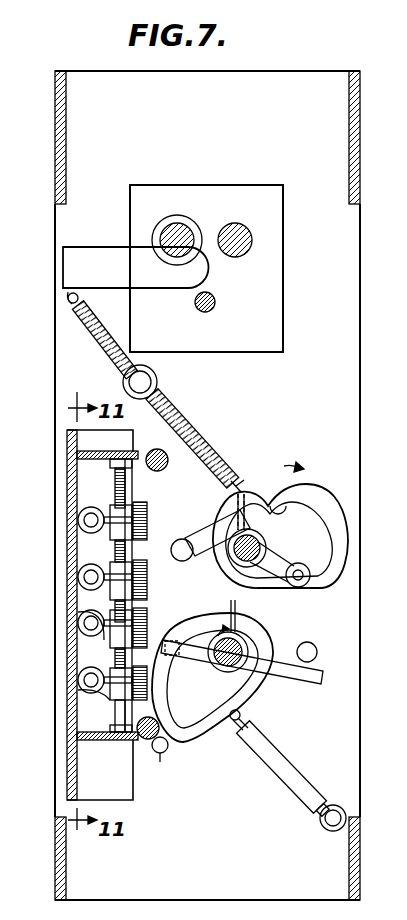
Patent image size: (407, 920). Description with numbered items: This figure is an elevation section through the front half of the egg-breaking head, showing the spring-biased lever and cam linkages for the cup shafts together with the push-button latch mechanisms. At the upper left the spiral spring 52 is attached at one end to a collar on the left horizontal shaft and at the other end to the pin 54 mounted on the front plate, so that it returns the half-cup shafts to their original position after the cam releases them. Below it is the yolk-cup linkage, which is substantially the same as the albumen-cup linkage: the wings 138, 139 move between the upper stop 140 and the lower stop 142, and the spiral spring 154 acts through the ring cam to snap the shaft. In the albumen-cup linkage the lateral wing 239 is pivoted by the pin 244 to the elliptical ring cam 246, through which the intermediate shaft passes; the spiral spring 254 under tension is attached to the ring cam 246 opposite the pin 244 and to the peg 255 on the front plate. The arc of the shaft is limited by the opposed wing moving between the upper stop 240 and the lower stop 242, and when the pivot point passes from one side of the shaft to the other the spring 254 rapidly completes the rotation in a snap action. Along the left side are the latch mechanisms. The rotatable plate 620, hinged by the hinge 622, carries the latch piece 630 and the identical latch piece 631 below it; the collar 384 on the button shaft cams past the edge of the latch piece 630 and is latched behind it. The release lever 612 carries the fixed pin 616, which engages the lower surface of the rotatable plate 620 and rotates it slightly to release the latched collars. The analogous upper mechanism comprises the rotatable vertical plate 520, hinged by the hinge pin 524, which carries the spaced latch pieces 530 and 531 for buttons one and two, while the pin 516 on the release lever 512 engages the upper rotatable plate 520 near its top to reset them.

The spiral spring 52 is at (100, 340).
The pin 54 is at (157, 386).
The spiral spring 154 is at (200, 426).
The upper stop 140 is at (306, 490).
The wing 138 is at (196, 516).
The lower stop 142 is at (177, 540).
The wing 139 is at (296, 562).
The wing 239 is at (202, 662).
The upper stop 240 is at (322, 642).
The pin 244 is at (172, 640).
The elliptical ring cam 246 is at (244, 708).
The spiral spring 254 is at (297, 754).
The peg 255 is at (334, 805).
The release lever 512 is at (70, 438).
The pin 516 is at (112, 459).
The fixed pin 616 is at (110, 726).
The rotatable vertical plate 520 is at (125, 493).
The hinge pin 524 is at (118, 500).
The latch piece 530 is at (82, 508).
The latch piece 531 is at (100, 558).
The latch piece 630 is at (97, 608).
The hinge 622 is at (110, 640).
The collar 384 is at (85, 640).
The latch piece 631 is at (76, 702).
The rotatable plate 620 is at (120, 702).
The release lever 612 is at (75, 742).
The lower stop 242 is at (162, 756).